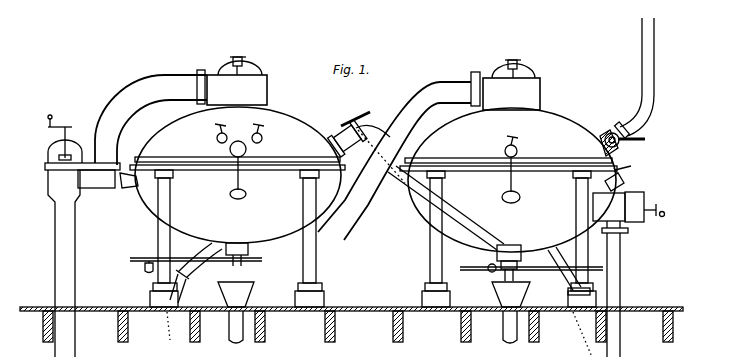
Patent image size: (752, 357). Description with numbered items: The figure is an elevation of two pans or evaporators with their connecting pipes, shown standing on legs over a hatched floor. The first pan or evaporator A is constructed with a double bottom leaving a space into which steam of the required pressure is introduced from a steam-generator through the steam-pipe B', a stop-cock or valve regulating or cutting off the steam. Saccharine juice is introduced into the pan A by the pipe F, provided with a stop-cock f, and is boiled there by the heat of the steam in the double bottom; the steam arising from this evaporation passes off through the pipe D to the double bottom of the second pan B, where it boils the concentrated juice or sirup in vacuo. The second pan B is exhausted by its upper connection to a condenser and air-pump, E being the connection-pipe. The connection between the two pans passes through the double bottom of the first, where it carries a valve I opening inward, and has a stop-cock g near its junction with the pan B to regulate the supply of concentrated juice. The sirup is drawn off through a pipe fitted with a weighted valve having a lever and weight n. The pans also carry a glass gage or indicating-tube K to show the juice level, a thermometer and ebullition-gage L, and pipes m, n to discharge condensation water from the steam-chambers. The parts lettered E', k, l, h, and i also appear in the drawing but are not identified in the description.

The pan or evaporator A is at (508, 208).
The second pan B is at (227, 125).
The ebullition-gage L is at (260, 128).
The valve I is at (236, 293).
The connection-pipe E is at (151, 120).
The vertical supply pipe with valve E' is at (82, 236).
The pipe D is at (394, 161).
The stop-cock g is at (359, 134).
The inclined pipe to second vessel discharge k is at (446, 208).
The glass gage or indicating-tube K is at (515, 169).
The discharge valve of second vessel l is at (511, 294).
The pipe m is at (531, 271).
The pipe n is at (196, 273).
The operating rod with weight h is at (196, 268).
The stop-cock f is at (622, 138).
The pipe F is at (637, 77).
The steam-pipe B' is at (629, 274).
The small cock on second vessel i is at (618, 176).